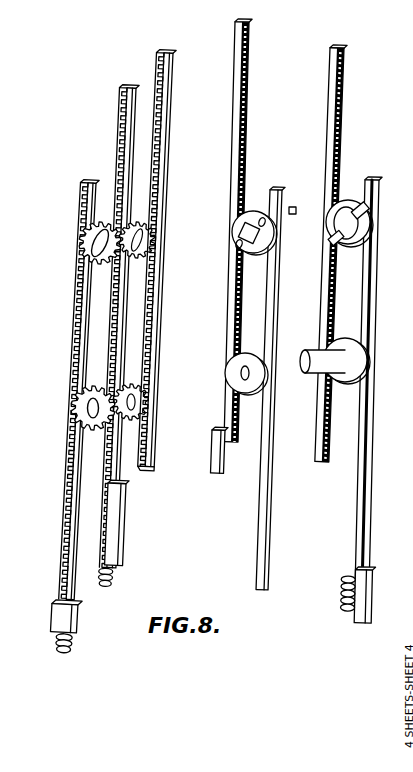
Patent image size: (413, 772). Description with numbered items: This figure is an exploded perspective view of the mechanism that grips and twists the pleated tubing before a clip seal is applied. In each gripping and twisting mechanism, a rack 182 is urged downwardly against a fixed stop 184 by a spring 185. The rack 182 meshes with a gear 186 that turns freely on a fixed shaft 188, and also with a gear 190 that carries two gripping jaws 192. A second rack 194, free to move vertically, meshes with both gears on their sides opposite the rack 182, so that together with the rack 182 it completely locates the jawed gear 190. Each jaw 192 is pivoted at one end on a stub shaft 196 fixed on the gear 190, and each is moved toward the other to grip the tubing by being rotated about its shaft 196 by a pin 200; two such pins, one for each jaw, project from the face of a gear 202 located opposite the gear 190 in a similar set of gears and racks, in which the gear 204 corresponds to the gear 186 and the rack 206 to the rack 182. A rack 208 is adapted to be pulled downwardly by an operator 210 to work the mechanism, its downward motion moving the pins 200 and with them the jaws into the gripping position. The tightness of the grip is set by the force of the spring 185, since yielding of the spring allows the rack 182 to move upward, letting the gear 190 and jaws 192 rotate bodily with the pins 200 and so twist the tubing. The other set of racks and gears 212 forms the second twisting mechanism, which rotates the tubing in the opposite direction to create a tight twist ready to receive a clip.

The rack 182 is at (357, 482).
The fixed stop 184 is at (368, 596).
The spring 185 is at (342, 605).
The gear 186 is at (347, 347).
The fixed shaft 188 is at (340, 366).
The gear 190 is at (346, 198).
The gripping jaws 192 is at (331, 240).
The second rack 194 is at (340, 115).
The stub shaft 196 is at (366, 214).
The pin 200 is at (292, 206).
The gear 202 is at (240, 216).
The gear 204 is at (236, 373).
The rack 206 is at (258, 549).
The rack 208 is at (228, 292).
The operator 210 is at (214, 460).
The set of racks and gears 212 is at (84, 184).